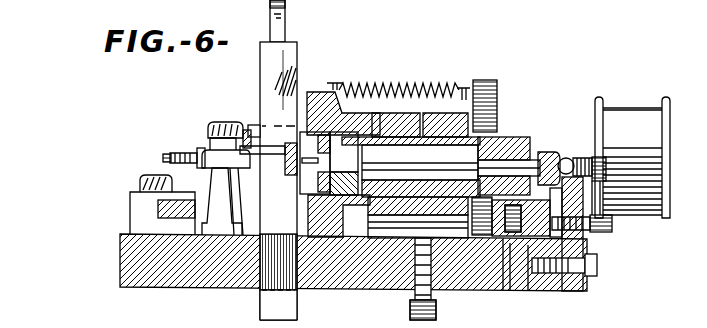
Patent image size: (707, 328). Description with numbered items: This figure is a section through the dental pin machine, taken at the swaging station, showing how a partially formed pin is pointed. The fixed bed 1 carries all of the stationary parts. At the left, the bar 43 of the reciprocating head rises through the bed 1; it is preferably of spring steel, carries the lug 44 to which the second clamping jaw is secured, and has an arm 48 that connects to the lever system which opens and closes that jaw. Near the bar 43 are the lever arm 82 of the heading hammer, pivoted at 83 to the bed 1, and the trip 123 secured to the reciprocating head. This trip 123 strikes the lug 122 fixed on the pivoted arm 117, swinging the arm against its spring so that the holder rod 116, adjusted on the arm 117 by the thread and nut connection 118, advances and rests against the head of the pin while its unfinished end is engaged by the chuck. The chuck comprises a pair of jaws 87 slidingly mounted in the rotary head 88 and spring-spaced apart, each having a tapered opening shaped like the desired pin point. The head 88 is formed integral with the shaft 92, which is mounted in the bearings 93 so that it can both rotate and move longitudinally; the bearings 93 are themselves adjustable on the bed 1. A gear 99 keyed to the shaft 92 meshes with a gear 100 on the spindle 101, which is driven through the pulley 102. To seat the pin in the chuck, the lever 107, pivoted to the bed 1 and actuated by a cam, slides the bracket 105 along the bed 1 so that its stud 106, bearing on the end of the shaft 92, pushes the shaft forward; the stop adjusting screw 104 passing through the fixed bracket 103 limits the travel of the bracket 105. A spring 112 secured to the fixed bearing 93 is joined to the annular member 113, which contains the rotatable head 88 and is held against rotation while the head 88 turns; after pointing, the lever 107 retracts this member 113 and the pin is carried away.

The bed 1 is at (360, 288).
The bar 43 is at (278, 160).
The lug 44 is at (293, 183).
The arm 48 is at (264, 67).
The lever arm 82 is at (186, 200).
The pivot 83 is at (140, 184).
The jaws 87 is at (326, 104).
The rotary head 88 is at (344, 152).
The shaft 92 is at (411, 187).
The bearings 93 is at (389, 110).
The gear 99 is at (504, 134).
The gear 100 is at (482, 79).
The spindle 101 is at (582, 159).
The pulley 102 is at (642, 140).
The bracket 103 is at (586, 245).
The stop adjusting screw 104 is at (614, 226).
The bracket 105 is at (531, 292).
The stud 106 is at (548, 151).
The lever 107 is at (516, 291).
The spring 112 is at (428, 105).
The annular member 113 is at (338, 84).
The holder rod 116 is at (185, 156).
The pivoted arm 117 is at (212, 155).
The thread and nut connection 118 is at (166, 164).
The lug 122 is at (247, 130).
The trip 123 is at (254, 124).